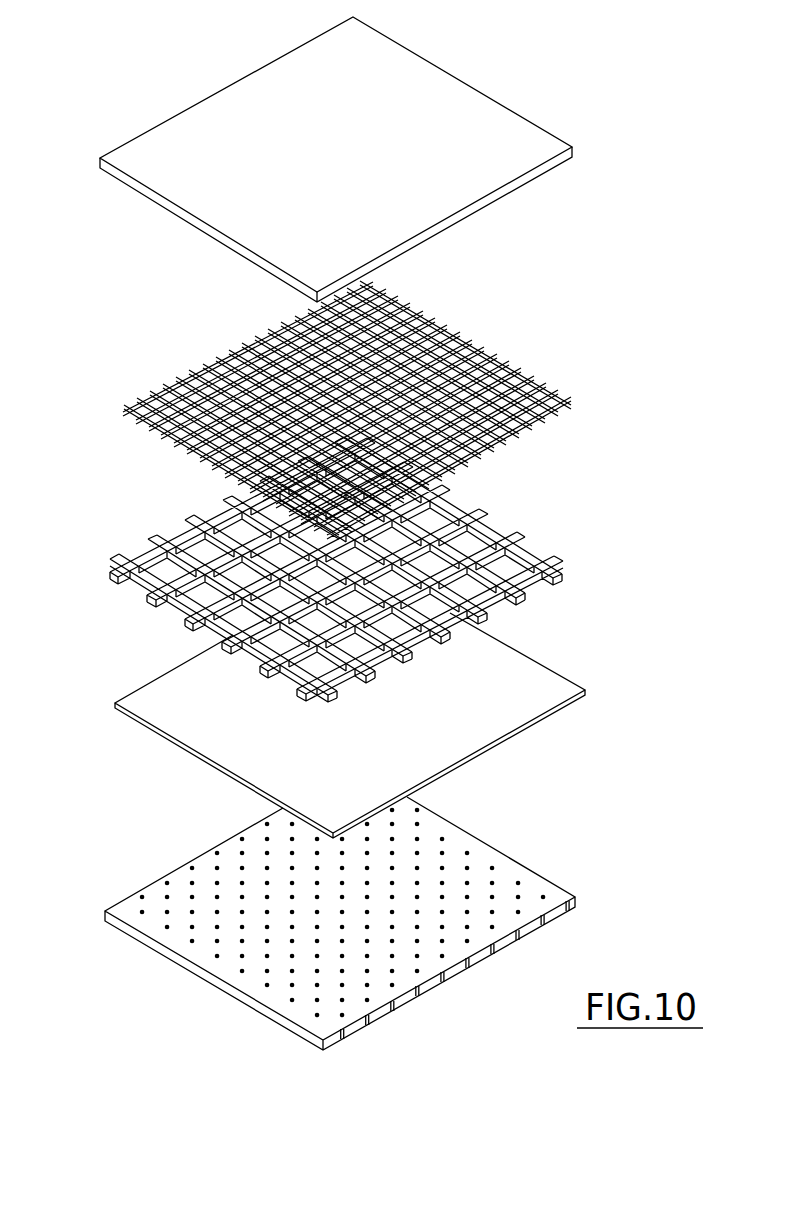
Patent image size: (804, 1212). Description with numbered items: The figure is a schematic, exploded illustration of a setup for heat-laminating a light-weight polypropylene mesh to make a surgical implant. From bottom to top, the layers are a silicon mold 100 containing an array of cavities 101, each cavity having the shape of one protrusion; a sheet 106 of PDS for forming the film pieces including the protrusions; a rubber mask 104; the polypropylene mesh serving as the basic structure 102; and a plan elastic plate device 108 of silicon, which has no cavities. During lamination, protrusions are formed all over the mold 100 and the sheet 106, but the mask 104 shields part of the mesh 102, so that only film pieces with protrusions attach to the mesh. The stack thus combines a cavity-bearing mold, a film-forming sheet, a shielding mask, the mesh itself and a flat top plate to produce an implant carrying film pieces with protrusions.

The silicon mold 100 is at (168, 954).
The cavities 101 is at (217, 868).
The basic structure 102 is at (205, 373).
The rubber mask 104 is at (160, 567).
The sheet of PDS 106 is at (177, 692).
The plan elastic plate device 108 is at (218, 128).